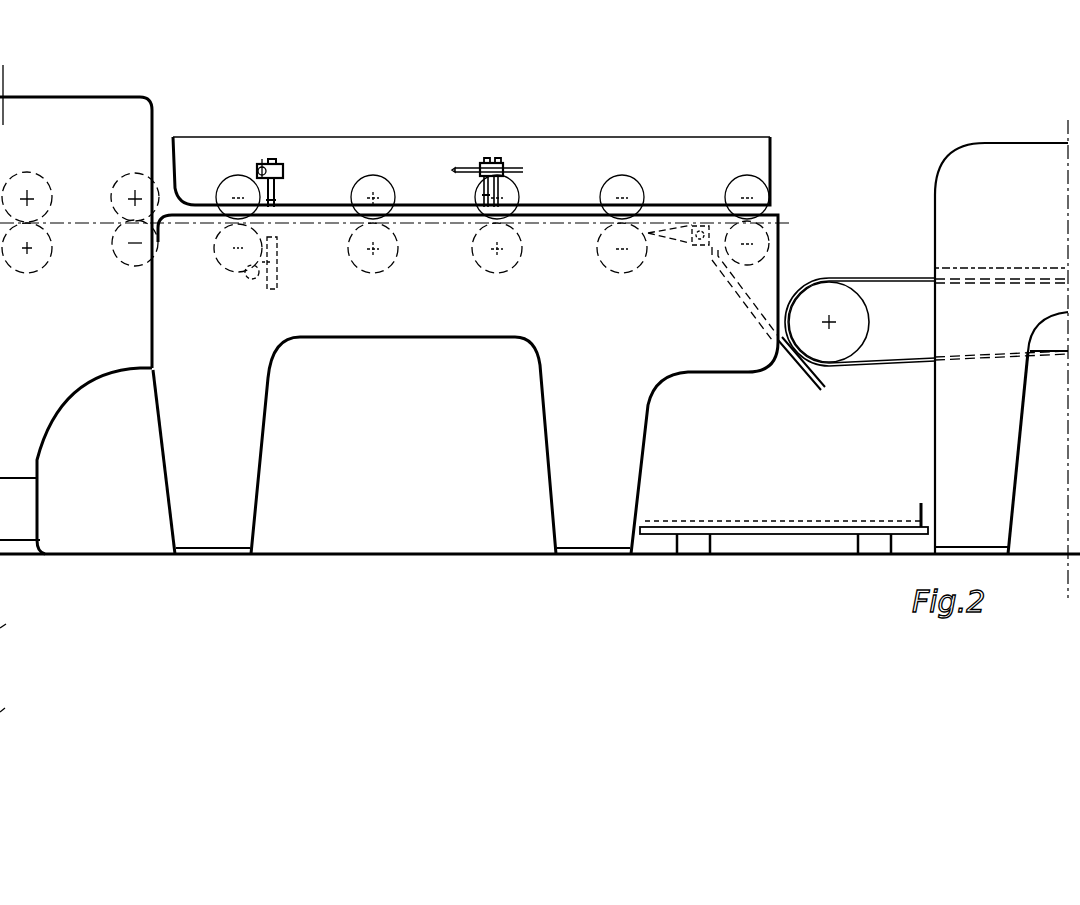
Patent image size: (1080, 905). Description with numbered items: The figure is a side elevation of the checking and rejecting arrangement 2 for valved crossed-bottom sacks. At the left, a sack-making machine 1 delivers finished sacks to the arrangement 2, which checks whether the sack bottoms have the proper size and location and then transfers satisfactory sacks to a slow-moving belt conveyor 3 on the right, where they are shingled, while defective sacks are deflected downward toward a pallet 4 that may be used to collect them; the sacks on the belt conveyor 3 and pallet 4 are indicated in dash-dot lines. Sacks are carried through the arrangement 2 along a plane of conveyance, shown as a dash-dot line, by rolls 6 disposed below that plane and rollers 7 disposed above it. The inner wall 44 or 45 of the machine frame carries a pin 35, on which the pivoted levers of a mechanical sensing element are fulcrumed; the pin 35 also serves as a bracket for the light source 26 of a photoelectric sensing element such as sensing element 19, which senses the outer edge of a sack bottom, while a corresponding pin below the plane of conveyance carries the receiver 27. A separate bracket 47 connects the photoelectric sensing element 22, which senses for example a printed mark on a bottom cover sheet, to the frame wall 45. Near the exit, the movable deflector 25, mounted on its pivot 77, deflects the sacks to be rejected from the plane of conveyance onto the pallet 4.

The sack-making machine 1 is at (121, 96).
The checking and rejecting arrangement 2 is at (349, 135).
The belt conveyor 3 is at (900, 366).
The pallet 4 is at (768, 528).
The rolls 6 is at (232, 262).
The rollers 7 is at (236, 192).
The sensing element 19 is at (283, 162).
The sensing element 22 is at (503, 164).
The movable deflector 25 is at (683, 240).
The light source 26 is at (280, 201).
The receiver 27 is at (277, 248).
The pin 35 is at (261, 168).
The inner wall 44 is at (429, 158).
The inner wall 45 is at (449, 91).
The bracket 47 is at (466, 168).
The pivot 77 is at (701, 246).